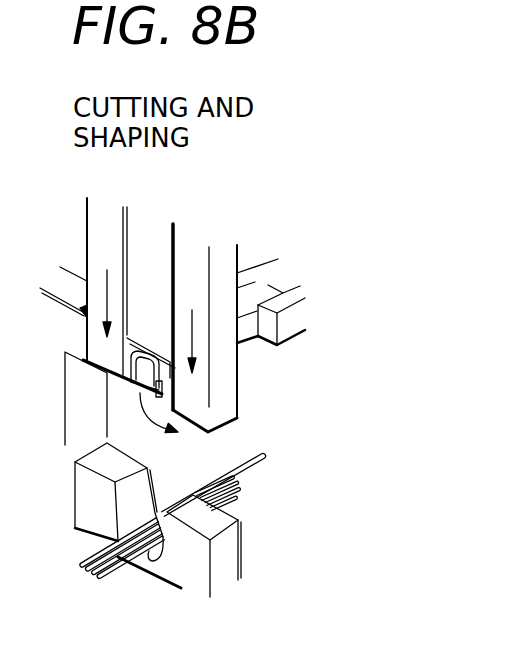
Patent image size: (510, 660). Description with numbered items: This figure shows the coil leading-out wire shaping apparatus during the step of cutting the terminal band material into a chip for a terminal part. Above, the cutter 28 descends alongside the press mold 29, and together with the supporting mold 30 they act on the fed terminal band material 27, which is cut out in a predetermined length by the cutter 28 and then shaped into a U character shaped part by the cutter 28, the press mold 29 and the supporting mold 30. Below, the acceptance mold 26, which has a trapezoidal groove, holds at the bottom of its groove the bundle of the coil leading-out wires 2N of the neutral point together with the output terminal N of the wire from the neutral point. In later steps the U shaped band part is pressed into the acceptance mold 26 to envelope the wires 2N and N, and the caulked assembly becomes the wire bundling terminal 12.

The cutter 28 is at (95, 208).
The press mold 29 is at (153, 233).
The supporting mold 30 is at (250, 334).
The wire bundling terminal 12 is at (172, 379).
The acceptance mold 26 is at (93, 505).
The terminal band material 27 is at (149, 482).
The output terminal of the wire from the neutral point N is at (266, 462).
The bundle of the coil leading-out wires of the neutral point 2N is at (118, 573).